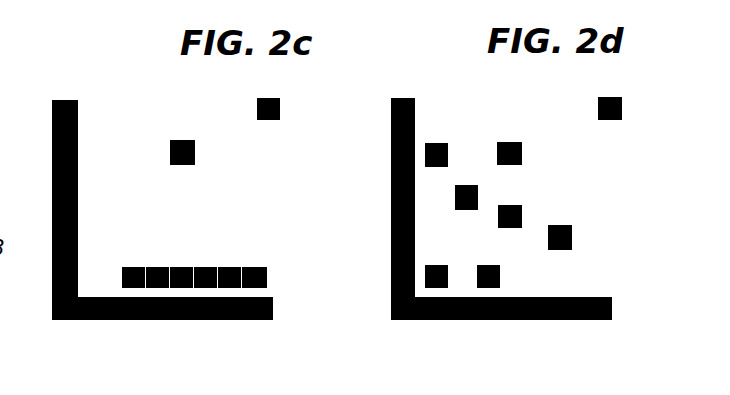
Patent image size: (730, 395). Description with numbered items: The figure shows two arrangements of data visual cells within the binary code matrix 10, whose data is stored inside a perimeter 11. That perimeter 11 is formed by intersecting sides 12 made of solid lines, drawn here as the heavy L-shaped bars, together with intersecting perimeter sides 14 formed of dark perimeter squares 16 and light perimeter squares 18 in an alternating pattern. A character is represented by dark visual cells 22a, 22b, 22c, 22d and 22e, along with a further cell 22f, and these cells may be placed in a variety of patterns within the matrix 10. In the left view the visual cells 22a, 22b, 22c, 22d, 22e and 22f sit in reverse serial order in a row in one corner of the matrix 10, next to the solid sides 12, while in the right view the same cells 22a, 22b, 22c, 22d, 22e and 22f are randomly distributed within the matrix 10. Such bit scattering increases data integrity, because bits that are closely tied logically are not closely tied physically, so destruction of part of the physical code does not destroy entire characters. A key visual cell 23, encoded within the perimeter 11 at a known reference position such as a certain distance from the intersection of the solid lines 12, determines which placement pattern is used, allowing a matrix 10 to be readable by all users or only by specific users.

In FIG. 2C, the binary code matrix 10 is at (345, 176).
In FIG. 2D, the binary code matrix 10 is at (672, 80).
In FIG. 2C, the perimeter 11 is at (317, 258).
In FIG. 2D, the perimeter 11 is at (648, 257).
In FIG. 2C, the sides formed of solid lines 12 is at (52, 210).
In FIG. 2D, the sides formed of solid lines 12 is at (391, 245).
In FIG. 2C, the perimeter sides 14 is at (201, 96).
In FIG. 2D, the perimeter sides 14 is at (538, 98).
In FIG. 2C, the dark perimeter squares 16 is at (281, 107).
In FIG. 2D, the dark perimeter squares 16 is at (600, 100).
In FIG. 2C, the light perimeter squares 18 is at (127, 107).
In FIG. 2D, the light perimeter squares 18 is at (468, 101).
In FIG. 2C, the dark visual cell 22a is at (272, 264).
In FIG. 2D, the dark visual cell 22a is at (467, 210).
In FIG. 2C, the dark visual cell 22b is at (230, 267).
In FIG. 2D, the dark visual cell 22b is at (522, 153).
In FIG. 2C, the dark visual cell 22c is at (205, 267).
In FIG. 2D, the dark visual cell 22c is at (572, 240).
In FIG. 2C, the dark visual cell 22d is at (179, 267).
In FIG. 2D, the dark visual cell 22d is at (500, 276).
In FIG. 2C, the dark visual cell 22e is at (155, 267).
In FIG. 2D, the dark visual cell 22e is at (462, 136).
In FIG. 2C, the code element f 22f is at (127, 267).
In FIG. 2D, the code element f 22f is at (446, 265).
In FIG. 2C, the key visual cell 23 is at (197, 153).
In FIG. 2D, the key visual cell 23 is at (520, 206).